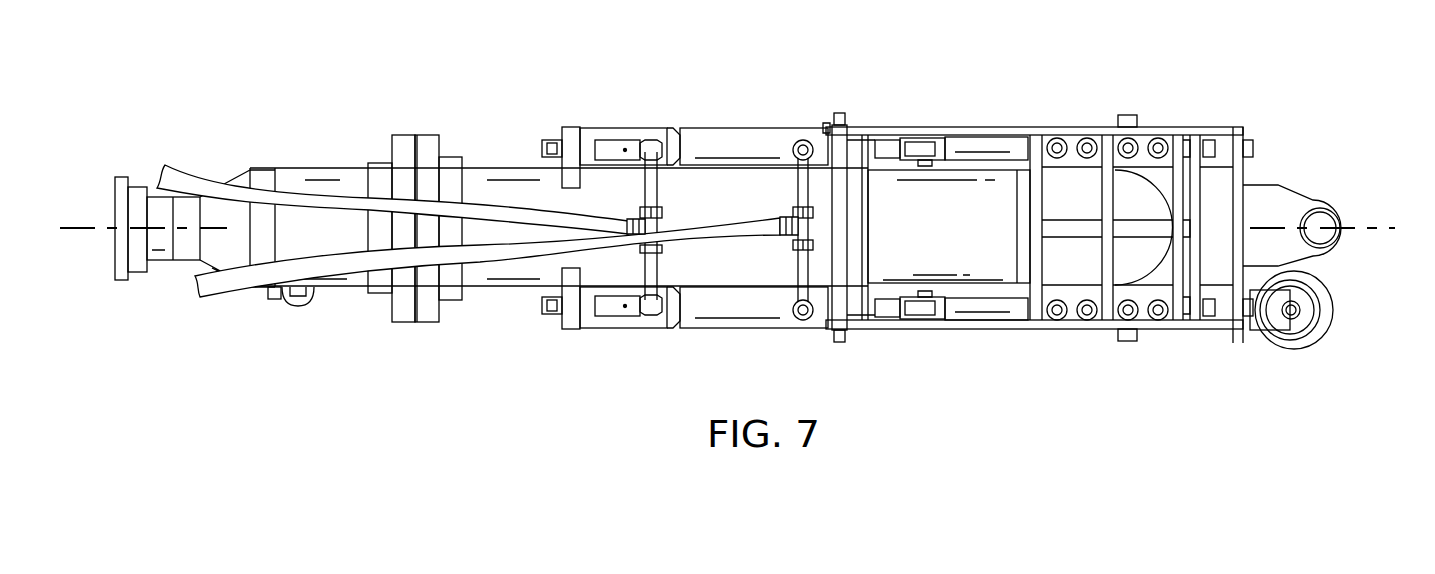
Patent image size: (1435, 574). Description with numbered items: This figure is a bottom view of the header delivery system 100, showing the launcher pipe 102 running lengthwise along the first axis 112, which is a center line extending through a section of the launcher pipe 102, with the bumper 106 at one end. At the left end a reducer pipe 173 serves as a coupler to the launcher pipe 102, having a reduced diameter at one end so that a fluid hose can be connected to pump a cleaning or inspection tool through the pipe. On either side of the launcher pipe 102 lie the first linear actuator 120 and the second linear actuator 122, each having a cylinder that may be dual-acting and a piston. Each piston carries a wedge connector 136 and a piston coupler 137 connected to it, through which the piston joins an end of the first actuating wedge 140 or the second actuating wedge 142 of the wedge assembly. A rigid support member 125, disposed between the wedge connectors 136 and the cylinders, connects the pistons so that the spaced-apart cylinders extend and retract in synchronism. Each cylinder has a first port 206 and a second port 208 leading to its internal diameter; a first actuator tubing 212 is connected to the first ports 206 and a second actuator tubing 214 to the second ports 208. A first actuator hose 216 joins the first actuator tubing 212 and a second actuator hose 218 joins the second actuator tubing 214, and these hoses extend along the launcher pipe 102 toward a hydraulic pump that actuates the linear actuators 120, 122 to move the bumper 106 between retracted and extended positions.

The header delivery system 100 is at (345, 78).
The launcher pipe 102 is at (483, 165).
The bumper 106 is at (1072, 138).
The first axis 112 is at (78, 226).
The first linear actuator 120 is at (685, 124).
The second linear actuator 122 is at (685, 335).
The support member 125 is at (870, 229).
The wedge connector 136 is at (905, 137).
The piston coupler 137 is at (885, 138).
The first actuating wedge 140 is at (995, 312).
The second actuating wedge 142 is at (995, 143).
The reducer pipe 173 is at (262, 168).
The first port 206 is at (640, 150).
The second port 208 is at (800, 137).
The first actuator tubing 212 is at (601, 231).
The second actuator tubing 214 is at (797, 188).
The first actuator hose 216 is at (505, 200).
The second actuator hose 218 is at (505, 268).